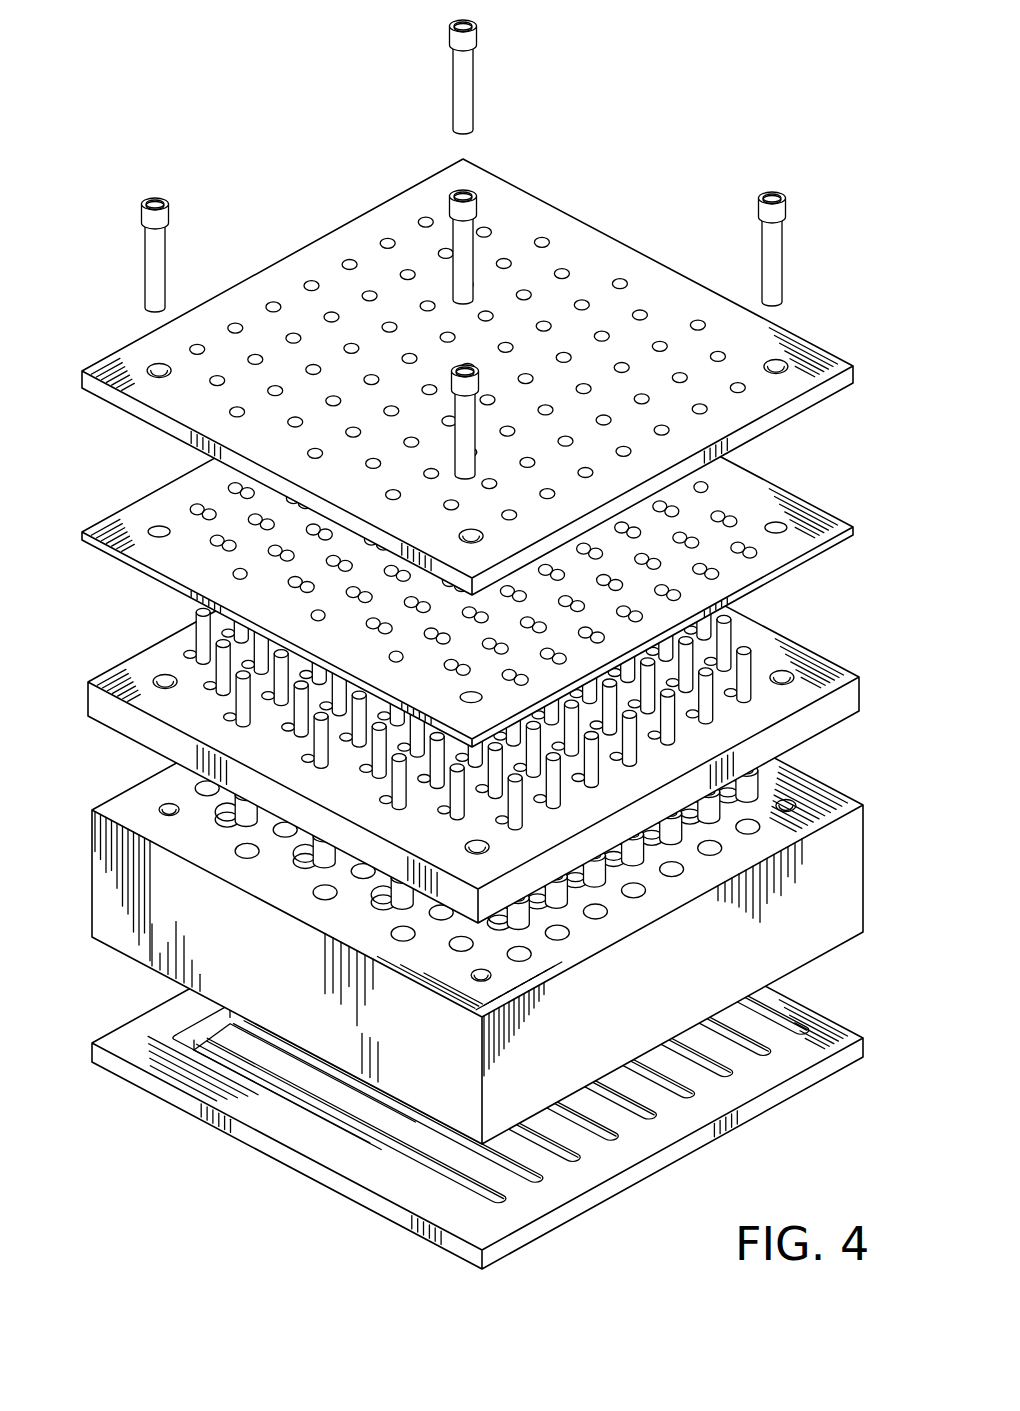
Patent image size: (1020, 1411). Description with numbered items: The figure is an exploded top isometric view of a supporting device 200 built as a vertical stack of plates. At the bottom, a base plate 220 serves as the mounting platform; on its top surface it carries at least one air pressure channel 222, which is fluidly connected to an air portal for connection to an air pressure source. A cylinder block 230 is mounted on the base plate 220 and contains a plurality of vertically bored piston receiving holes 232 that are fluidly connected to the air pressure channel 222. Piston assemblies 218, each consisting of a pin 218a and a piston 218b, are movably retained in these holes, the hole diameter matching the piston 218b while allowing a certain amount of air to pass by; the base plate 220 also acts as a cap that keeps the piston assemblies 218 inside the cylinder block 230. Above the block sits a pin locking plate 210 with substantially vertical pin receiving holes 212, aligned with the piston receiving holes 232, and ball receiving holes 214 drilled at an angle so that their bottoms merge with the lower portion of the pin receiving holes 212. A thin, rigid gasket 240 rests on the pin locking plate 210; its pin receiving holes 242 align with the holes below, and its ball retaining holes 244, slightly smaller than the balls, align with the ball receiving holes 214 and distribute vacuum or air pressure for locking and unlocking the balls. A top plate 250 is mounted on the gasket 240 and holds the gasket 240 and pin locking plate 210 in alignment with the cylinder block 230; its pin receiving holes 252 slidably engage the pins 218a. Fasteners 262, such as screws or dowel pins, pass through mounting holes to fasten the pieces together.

The supporting device 200 is at (474, 644).
The pin locking plate 210 is at (820, 667).
The pin receiving holes 212 is at (707, 715).
The ball receiving holes 214 is at (727, 690).
The piston assemblies 218 is at (224, 838).
The pin 218a is at (236, 708).
The piston 218b is at (230, 816).
The base plate 220 is at (827, 1055).
The air pressure channel 222 is at (535, 1178).
The cylinder block 230 is at (820, 917).
The piston receiving holes 232 is at (507, 953).
The gasket 240 is at (783, 490).
The pin receiving holes 242 is at (707, 565).
The ball retaining holes 244 is at (670, 528).
The top plate 250 is at (792, 343).
The pin receiving holes 252 is at (639, 311).
The fasteners 262 is at (470, 72).